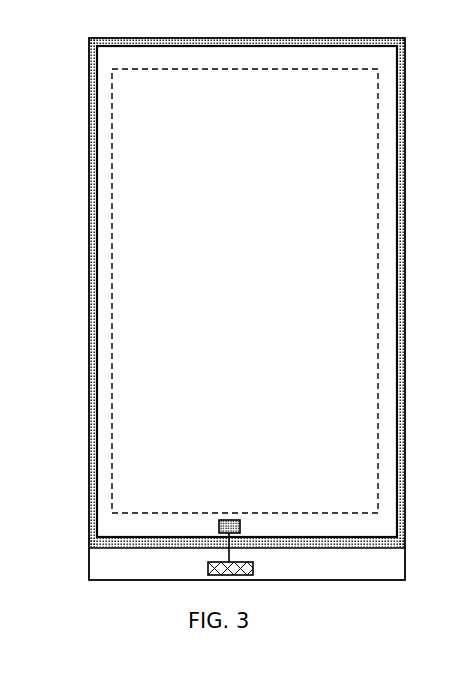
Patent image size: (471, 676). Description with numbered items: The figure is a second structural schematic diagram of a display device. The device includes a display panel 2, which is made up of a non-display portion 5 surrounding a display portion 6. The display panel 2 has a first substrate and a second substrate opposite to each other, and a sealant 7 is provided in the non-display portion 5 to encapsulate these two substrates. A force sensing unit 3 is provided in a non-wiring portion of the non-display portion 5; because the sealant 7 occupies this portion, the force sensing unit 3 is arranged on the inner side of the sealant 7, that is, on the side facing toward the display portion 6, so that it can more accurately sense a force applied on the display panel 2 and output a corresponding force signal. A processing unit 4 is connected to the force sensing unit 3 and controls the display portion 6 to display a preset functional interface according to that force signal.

The display panel 2 is at (90, 372).
The force sensing unit 3 is at (225, 522).
The processing unit 4 is at (208, 570).
The non-display portion 5 is at (107, 288).
The display portion 6 is at (148, 257).
The sealant 7 is at (95, 440).